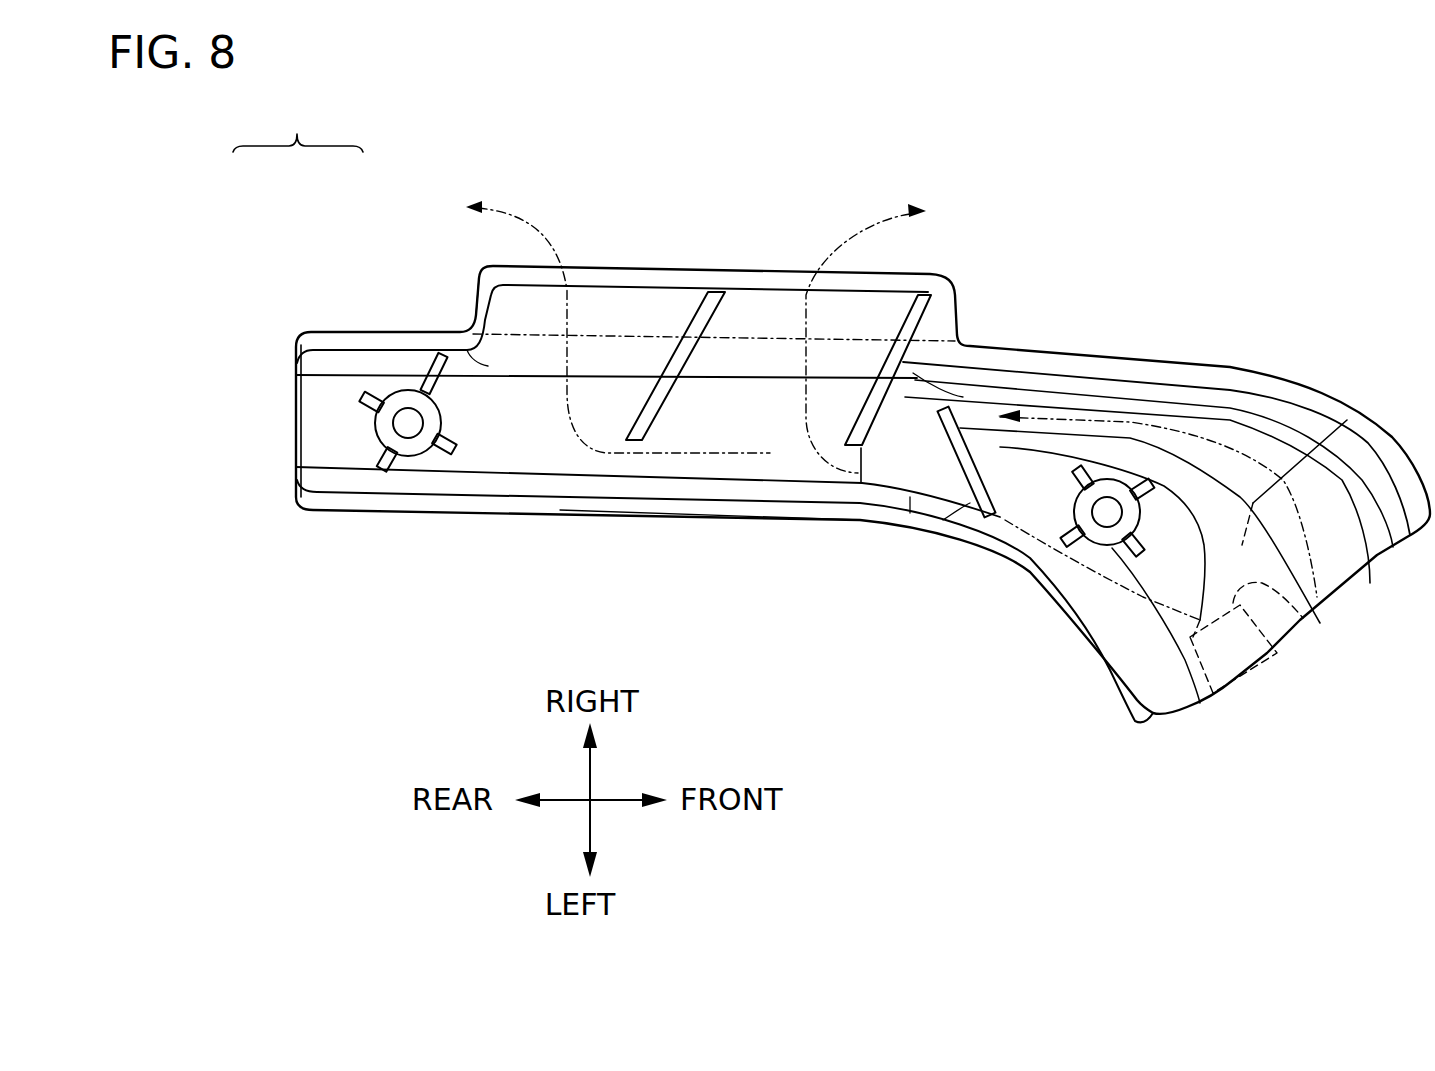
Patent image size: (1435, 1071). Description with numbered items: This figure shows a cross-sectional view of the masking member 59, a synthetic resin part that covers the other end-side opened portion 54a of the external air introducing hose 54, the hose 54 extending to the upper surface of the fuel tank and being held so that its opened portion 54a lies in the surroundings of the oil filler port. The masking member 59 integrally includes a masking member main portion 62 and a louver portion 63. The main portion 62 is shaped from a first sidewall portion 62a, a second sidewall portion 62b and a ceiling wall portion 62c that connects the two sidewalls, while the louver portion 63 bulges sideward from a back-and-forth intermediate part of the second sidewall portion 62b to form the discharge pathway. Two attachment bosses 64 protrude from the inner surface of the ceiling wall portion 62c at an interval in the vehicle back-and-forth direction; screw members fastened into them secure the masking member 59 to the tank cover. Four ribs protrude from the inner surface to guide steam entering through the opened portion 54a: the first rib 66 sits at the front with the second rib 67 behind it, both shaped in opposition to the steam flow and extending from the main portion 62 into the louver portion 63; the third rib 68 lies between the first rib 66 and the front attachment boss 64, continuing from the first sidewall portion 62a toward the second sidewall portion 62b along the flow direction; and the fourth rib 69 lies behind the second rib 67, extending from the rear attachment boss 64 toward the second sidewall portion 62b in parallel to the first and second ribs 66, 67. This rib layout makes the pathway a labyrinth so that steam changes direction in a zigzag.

The masking member 59 is at (298, 124).
The masking member main portion 62 is at (303, 328).
The louver portion 63 is at (474, 293).
The second rib 67 is at (670, 360).
The first rib 66 is at (868, 450).
The second sidewall portion 62b is at (1080, 357).
The ceiling wall portion 62c is at (1347, 420).
The attachment bosses 64 is at (410, 458).
The fourth rib 69 is at (448, 366).
The first sidewall portion 62a is at (781, 515).
The third rib 68 is at (960, 518).
The other end-side opened portion 54a is at (1297, 620).
The external air introducing hose 54 is at (1208, 680).